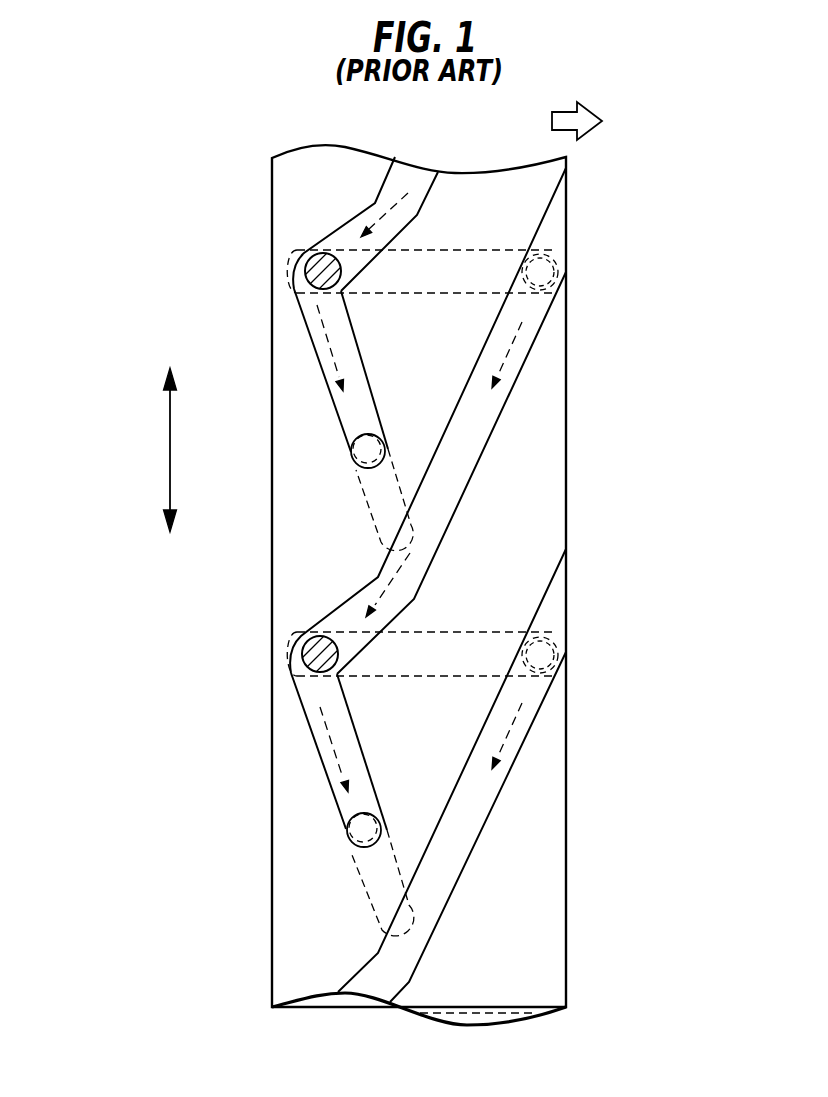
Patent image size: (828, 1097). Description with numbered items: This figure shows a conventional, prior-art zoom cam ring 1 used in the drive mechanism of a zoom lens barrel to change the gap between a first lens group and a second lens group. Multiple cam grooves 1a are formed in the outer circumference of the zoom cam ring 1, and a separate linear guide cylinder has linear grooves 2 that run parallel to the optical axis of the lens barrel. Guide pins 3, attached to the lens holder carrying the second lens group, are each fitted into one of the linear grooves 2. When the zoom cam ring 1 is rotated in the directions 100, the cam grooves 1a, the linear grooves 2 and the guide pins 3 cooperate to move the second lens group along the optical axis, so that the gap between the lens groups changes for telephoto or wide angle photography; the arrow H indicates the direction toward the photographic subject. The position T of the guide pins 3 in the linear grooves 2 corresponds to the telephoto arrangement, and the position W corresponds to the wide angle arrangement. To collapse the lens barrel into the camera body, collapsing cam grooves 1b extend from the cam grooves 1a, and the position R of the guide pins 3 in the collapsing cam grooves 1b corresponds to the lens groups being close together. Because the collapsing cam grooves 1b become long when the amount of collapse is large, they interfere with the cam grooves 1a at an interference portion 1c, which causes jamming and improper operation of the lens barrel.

The zoom cam ring 1 is at (535, 485).
The cam grooves 1a is at (485, 400).
The collapsing cam grooves 1b is at (337, 391).
The interference portion 1c is at (403, 520).
The linear grooves 2 is at (490, 263).
The guide pins 3 is at (304, 275).
The wide angle position W is at (285, 253).
The telephoto position T is at (573, 284).
The collapsed position R is at (339, 462).
The rotation directions 100 is at (168, 425).
The direction to the photographic subject H is at (591, 121).